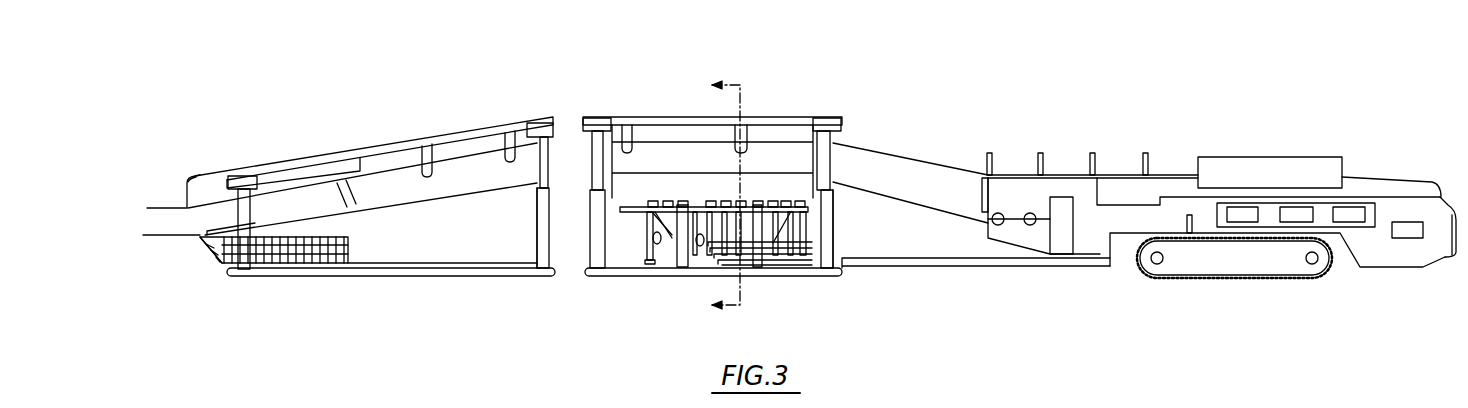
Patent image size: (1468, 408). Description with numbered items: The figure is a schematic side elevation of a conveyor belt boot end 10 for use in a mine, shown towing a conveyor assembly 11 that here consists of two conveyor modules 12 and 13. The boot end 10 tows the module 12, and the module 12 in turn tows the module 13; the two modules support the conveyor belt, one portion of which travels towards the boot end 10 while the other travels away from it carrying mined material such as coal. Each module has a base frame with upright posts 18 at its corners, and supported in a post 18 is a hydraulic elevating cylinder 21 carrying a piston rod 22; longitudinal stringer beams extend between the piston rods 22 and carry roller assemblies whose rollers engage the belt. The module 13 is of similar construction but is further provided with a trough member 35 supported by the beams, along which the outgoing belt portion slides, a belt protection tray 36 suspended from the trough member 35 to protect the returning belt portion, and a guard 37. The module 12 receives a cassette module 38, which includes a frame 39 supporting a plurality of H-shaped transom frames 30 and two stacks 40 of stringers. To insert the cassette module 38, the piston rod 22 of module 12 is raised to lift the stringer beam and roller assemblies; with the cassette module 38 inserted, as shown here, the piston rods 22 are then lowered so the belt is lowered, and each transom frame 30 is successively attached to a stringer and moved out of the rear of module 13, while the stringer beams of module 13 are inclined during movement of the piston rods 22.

The conveyor belt boot end 10 is at (1258, 130).
The conveyor assembly 11 is at (865, 116).
The conveyor module 12 is at (665, 80).
The conveyor module 13 is at (263, 132).
The upright post 18 is at (225, 262).
The hydraulic elevating cylinder 21 is at (540, 222).
The piston rod 22 is at (548, 140).
The transom frame 30 is at (645, 233).
The trough member 35 is at (207, 180).
The belt protection tray 36 is at (300, 205).
The guard 37 is at (270, 264).
The cassette module 38 is at (820, 290).
The frame 39 is at (690, 262).
The stack of stringers 40 is at (758, 270).